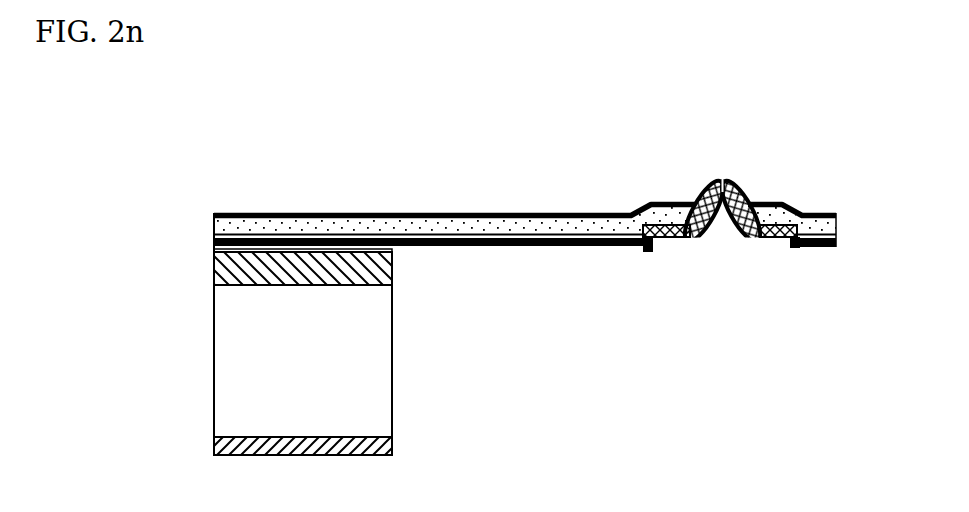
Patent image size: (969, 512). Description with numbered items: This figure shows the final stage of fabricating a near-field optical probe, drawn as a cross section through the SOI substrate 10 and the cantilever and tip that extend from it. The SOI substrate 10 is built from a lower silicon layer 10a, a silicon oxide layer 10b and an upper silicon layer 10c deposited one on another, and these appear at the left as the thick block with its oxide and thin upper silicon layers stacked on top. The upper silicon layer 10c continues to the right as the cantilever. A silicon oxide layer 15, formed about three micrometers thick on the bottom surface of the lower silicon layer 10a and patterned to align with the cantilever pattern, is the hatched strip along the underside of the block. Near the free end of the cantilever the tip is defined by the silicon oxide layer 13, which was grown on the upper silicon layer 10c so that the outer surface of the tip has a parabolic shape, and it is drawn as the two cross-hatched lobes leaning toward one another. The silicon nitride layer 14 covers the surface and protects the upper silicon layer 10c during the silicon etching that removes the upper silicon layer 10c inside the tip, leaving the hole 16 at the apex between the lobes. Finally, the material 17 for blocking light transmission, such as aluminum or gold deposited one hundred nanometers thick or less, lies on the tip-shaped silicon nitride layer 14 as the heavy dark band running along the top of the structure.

The SOI substrate 10 is at (92, 247).
The lower silicon layer 10a is at (225, 345).
The silicon oxide layer 10b is at (213, 280).
The upper silicon layer 10c is at (213, 251).
The silicon oxide layer 13 is at (737, 188).
The silicon nitride layer 14 is at (832, 225).
The silicon oxide layer 15 is at (215, 443).
The hole 16 is at (722, 150).
The material for blocking light transmission 17 is at (668, 198).